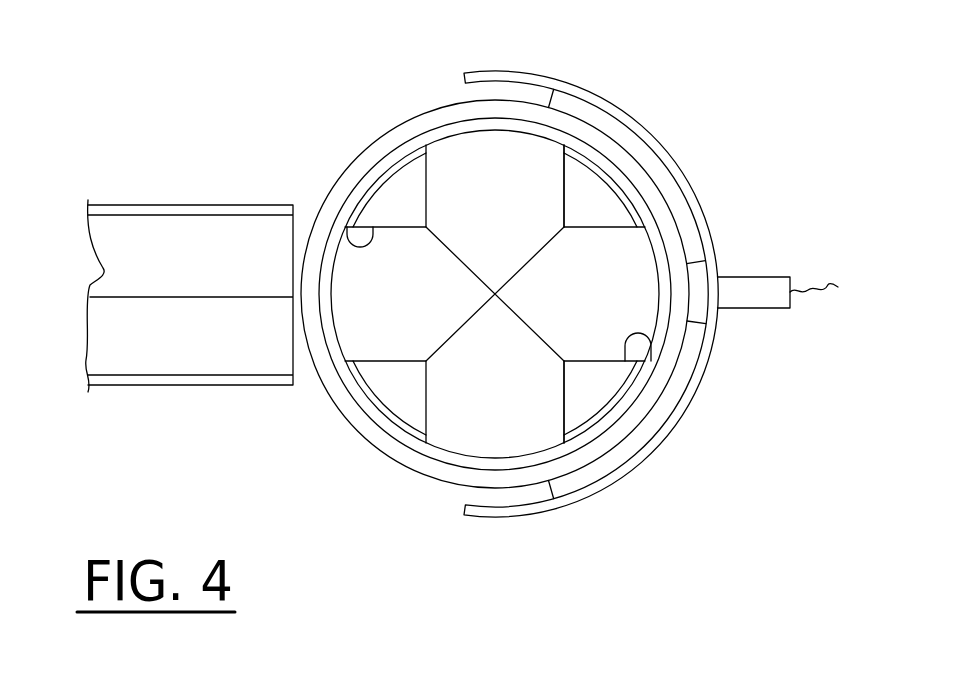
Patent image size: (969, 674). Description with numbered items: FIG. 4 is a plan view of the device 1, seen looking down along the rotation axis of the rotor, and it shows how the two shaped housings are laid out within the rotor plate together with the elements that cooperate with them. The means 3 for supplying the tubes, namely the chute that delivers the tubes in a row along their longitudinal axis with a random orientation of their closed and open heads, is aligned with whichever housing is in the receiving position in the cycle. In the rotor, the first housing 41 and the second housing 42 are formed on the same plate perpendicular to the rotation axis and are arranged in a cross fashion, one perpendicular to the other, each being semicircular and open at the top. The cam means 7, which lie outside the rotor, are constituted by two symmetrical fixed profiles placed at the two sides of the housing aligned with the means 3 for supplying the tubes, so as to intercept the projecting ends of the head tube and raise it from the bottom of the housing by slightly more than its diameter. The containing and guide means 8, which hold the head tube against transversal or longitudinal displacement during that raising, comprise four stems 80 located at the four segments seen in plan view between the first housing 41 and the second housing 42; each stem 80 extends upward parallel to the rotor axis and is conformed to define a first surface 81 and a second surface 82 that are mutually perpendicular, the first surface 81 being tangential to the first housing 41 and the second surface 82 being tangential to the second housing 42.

The device 1 is at (151, 75).
The means for supplying the tubes 3 is at (128, 352).
The cam means 7 is at (362, 150).
The containing and guide means 8 is at (730, 202).
The first housing 41 is at (357, 307).
The second housing 42 is at (463, 412).
The stems 80 is at (408, 187).
The first surface 81 is at (347, 233).
The second surface 82 is at (560, 188).